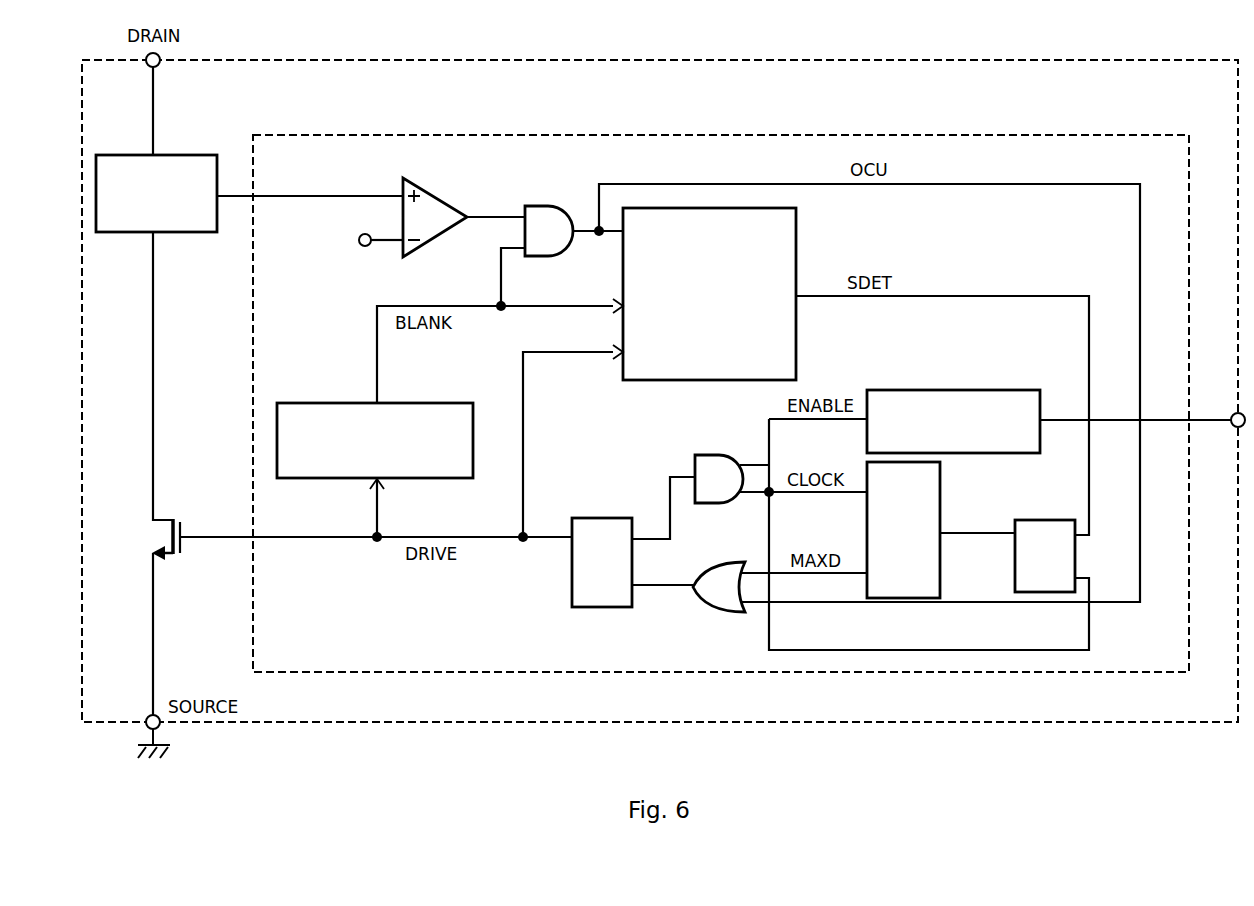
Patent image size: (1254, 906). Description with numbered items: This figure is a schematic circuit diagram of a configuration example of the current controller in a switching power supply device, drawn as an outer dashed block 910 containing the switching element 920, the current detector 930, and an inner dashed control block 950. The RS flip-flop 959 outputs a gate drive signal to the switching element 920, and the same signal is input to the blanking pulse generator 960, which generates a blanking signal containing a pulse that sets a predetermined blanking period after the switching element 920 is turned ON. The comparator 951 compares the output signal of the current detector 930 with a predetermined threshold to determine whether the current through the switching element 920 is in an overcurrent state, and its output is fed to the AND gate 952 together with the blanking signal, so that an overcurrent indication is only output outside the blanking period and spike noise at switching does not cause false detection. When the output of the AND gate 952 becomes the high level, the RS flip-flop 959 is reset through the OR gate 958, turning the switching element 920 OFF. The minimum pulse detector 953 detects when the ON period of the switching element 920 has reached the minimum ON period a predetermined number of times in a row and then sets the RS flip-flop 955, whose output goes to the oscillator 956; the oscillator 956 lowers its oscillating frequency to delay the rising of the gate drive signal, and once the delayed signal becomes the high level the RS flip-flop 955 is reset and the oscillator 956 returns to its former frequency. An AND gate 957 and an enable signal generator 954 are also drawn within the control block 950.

The switching power supply control circuit 910 is at (494, 59).
The switching element 920 is at (175, 520).
The current detector 930 is at (185, 155).
The control circuit 950 is at (621, 134).
The comparator 951 is at (439, 197).
The AND gate 952 is at (543, 206).
The minimum pulse detector 953 is at (797, 241).
The enable signal generator 954 is at (967, 390).
The RS flip-flop 955 is at (1045, 520).
The oscillator 956 is at (944, 492).
The AND circuit 957 is at (720, 455).
The OR gate 958 is at (712, 613).
The RS flip-flop 959 is at (597, 518).
The blanking pulse generator 960 is at (322, 403).